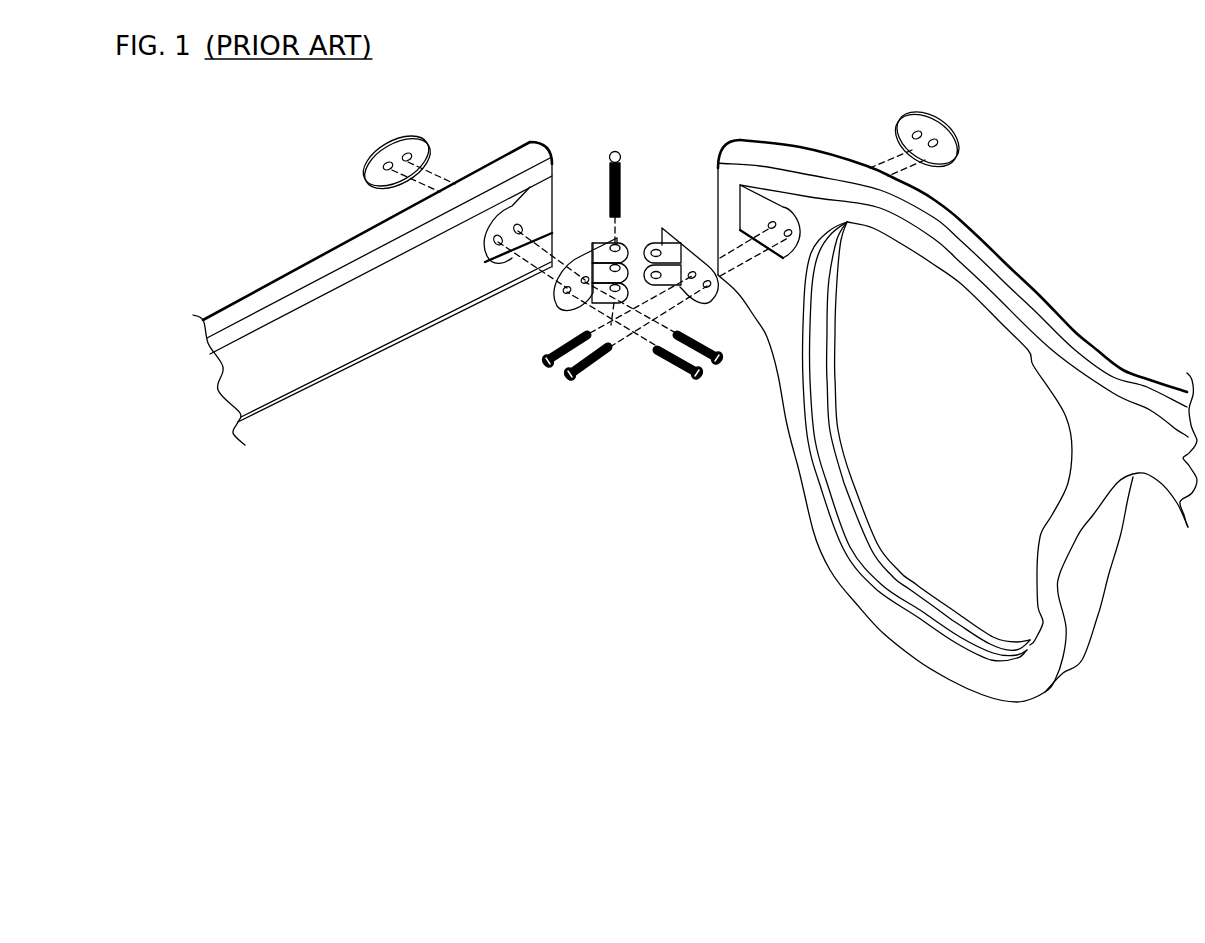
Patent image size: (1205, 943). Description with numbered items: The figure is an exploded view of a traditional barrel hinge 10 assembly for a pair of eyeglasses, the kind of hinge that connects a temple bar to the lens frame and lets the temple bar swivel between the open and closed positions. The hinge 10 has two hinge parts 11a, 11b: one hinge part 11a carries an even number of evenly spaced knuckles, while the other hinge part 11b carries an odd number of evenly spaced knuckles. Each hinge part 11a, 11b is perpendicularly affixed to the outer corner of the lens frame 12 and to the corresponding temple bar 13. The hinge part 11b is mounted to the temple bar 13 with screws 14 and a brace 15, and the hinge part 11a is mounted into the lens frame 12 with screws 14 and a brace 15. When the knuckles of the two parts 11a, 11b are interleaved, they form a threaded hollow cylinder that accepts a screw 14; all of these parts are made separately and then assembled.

The barrel hinge 10 is at (656, 421).
The hinge part 11a is at (687, 222).
The hinge part 11b is at (588, 232).
The lens frame 12 is at (957, 421).
The temple bar 13 is at (372, 293).
The screws 14 is at (553, 400).
The brace 15 is at (666, 138).